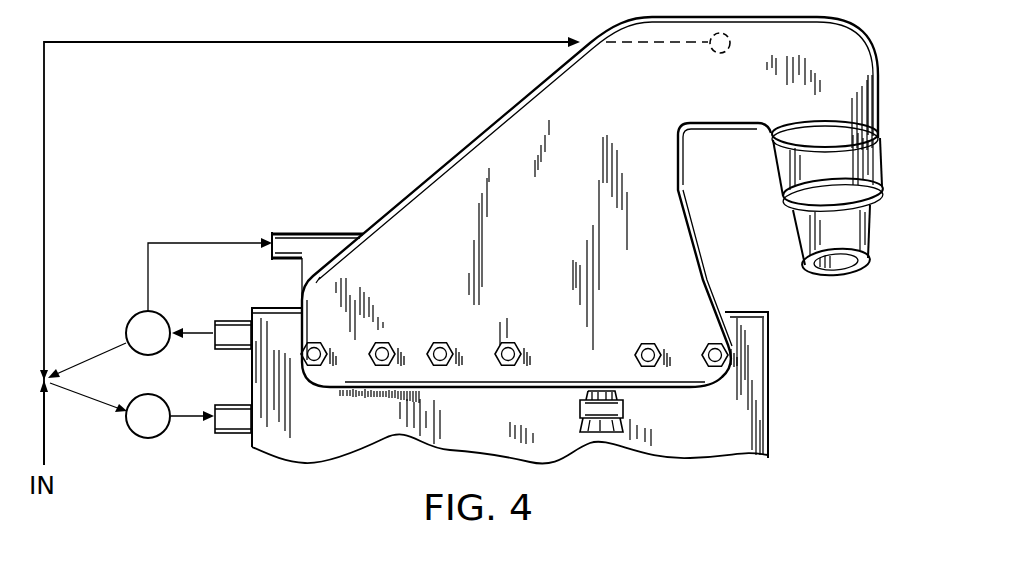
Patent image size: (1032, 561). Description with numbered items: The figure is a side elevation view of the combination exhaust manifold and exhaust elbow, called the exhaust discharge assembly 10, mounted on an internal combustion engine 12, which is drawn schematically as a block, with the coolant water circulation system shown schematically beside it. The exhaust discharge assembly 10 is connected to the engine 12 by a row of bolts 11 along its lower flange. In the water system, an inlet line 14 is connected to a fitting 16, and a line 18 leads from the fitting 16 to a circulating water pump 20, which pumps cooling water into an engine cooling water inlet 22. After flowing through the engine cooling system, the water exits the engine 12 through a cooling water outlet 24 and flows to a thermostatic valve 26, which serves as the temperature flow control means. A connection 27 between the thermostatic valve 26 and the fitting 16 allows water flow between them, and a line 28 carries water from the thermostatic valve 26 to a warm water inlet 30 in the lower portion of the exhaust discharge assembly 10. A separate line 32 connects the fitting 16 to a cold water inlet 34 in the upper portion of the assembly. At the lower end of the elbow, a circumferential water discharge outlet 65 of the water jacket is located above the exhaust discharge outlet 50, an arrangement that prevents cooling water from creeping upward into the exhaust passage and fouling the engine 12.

The exhaust discharge assembly 10 is at (452, 133).
The bolts 11 is at (372, 358).
The internal combustion engine 12 is at (288, 441).
The inlet line 14 is at (46, 440).
The fitting 16 is at (42, 379).
The line 18 is at (95, 395).
The circulating water pump 20 is at (157, 440).
The engine cooling water inlet 22 is at (233, 403).
The cooling water outlet 24 is at (220, 320).
The thermostatic valve 26 is at (140, 310).
The connection 27 is at (100, 350).
The line 28 is at (210, 243).
The warm water inlet 30 is at (296, 232).
The line 32 is at (46, 170).
The cold water inlet 34 is at (712, 52).
The exhaust discharge outlet 50 is at (840, 265).
The circumferential water discharge outlet 65 is at (871, 208).